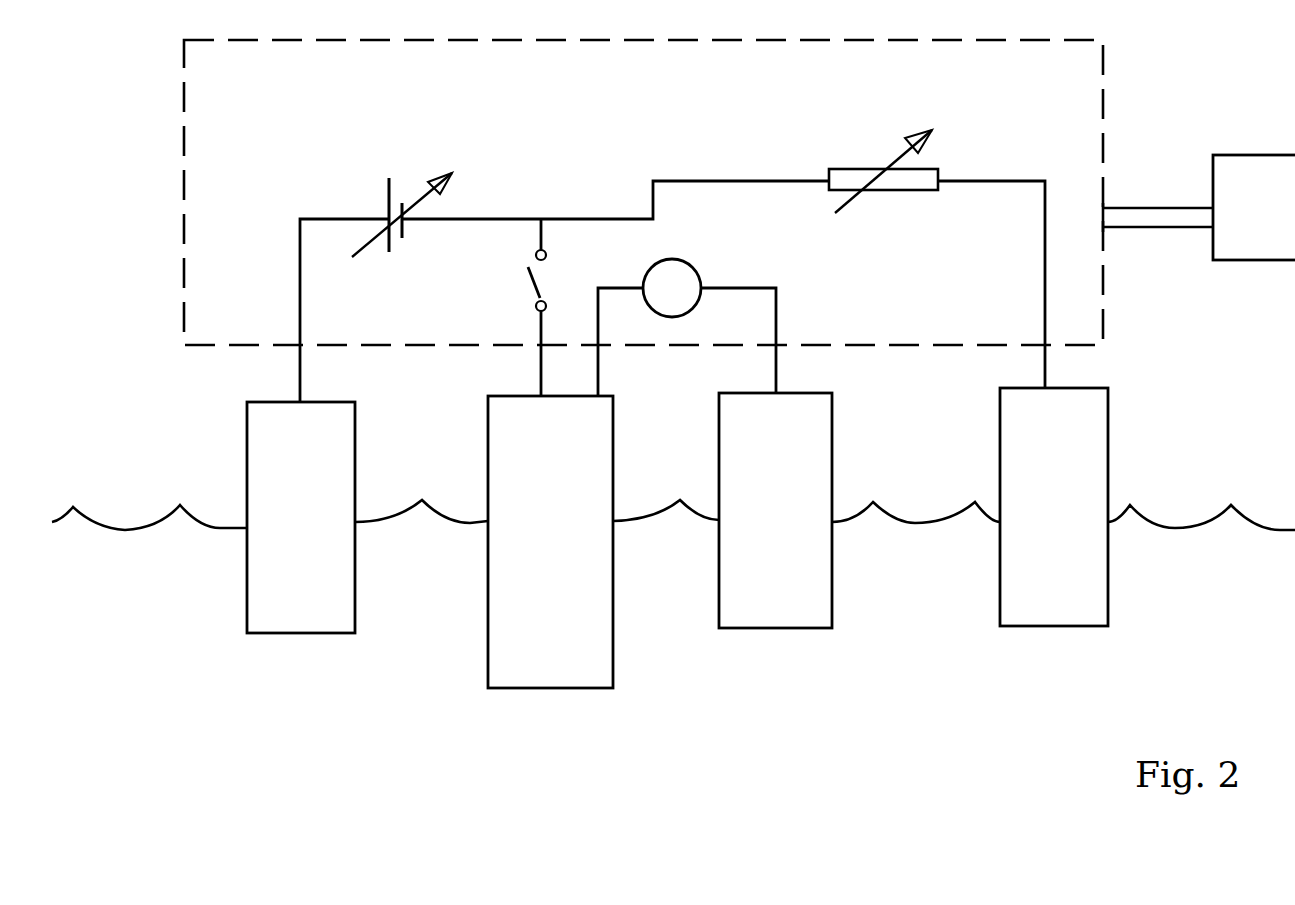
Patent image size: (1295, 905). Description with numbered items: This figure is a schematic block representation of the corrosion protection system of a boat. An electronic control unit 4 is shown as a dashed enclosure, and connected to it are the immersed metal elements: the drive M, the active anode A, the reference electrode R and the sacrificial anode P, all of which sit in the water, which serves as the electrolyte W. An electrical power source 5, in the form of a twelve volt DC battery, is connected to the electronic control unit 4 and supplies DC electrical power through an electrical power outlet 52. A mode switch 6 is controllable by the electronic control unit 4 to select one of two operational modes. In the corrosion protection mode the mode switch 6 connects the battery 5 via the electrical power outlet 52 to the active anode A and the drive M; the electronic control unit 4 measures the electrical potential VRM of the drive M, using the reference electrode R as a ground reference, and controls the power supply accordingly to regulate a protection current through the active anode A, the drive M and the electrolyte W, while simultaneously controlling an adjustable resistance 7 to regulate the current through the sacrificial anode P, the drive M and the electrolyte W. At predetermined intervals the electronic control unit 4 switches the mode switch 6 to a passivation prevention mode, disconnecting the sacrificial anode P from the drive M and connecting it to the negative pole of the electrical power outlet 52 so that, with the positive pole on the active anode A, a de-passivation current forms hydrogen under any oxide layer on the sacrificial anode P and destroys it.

The electronic control unit 4 is at (184, 238).
The electrical power source 5 is at (1246, 218).
The mode switch 6 is at (518, 278).
The adjustable resistance 7 is at (846, 160).
The electrical power outlet 52 is at (365, 168).
The electrical potential of the drive VRM is at (660, 262).
The active anode A is at (316, 538).
The drive M is at (570, 538).
The reference electrode R is at (793, 538).
The sacrificial anode P is at (1066, 538).
The electrolyte W is at (1180, 530).